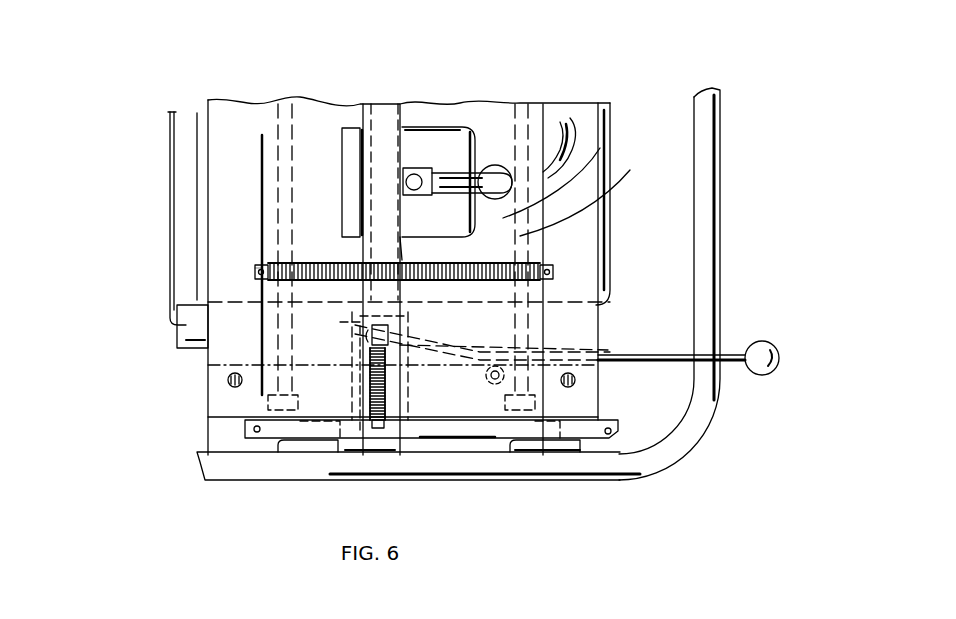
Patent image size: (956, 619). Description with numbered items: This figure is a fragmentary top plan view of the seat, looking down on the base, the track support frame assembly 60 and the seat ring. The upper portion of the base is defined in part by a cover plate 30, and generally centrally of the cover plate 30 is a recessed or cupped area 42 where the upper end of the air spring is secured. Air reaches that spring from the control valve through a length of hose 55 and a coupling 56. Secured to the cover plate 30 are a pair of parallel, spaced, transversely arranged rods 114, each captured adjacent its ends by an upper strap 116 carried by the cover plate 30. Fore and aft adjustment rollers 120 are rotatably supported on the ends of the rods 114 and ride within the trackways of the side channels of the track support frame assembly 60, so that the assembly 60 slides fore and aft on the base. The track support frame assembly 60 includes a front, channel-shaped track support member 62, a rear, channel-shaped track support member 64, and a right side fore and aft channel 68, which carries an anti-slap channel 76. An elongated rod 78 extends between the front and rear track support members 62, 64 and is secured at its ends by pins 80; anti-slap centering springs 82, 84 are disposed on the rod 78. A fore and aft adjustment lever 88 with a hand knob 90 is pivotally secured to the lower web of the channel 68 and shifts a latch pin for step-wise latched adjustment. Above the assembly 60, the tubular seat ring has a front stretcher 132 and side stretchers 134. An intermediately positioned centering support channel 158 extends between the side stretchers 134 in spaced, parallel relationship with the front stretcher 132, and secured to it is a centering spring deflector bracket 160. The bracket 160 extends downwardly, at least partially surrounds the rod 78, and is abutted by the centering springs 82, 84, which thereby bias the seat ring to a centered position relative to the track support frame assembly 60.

The cover plate 30 is at (540, 170).
The recessed or cupped area 42 is at (450, 145).
The hose 55 is at (485, 172).
The coupling 56 is at (415, 175).
The track support frame assembly 60 is at (283, 70).
The front track support member 62 is at (585, 232).
The rear track support member 64 is at (222, 185).
The right side fore and aft channel 68 is at (418, 393).
The anti-slap channel 76 is at (612, 426).
The elongated rod 78 is at (258, 268).
The pins 80 is at (258, 274).
The anti-slap centering spring 82 is at (488, 263).
The anti-slap centering spring 84 is at (322, 258).
The fore and aft adjustment lever 88 is at (640, 355).
The hand knob 90 is at (768, 342).
The transversely arranged rods 114 is at (280, 150).
The upper strap 116 is at (300, 165).
The fore and aft adjustment rollers 120 is at (296, 403).
The front stretcher 132 is at (720, 242).
The side stretchers 134 is at (483, 480).
The centering support channel 158 is at (400, 197).
The centering spring deflector bracket 160 is at (404, 256).